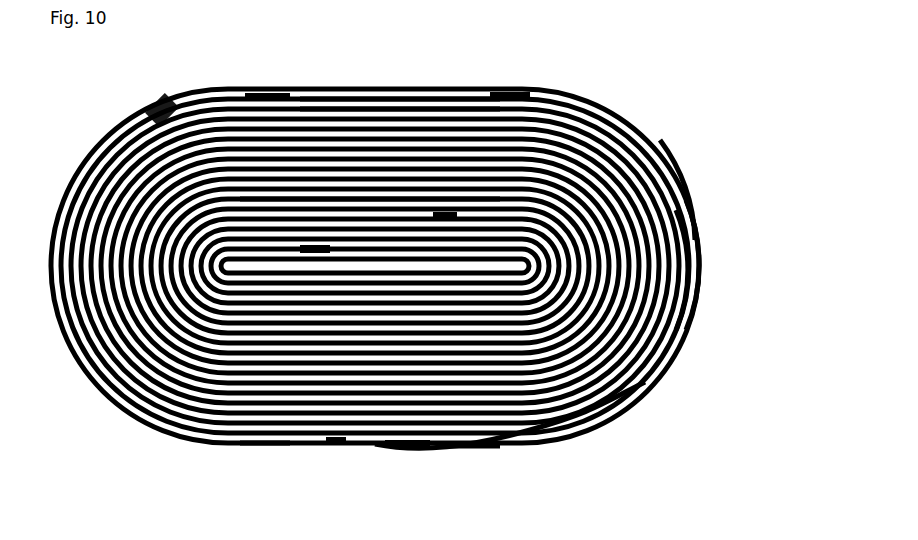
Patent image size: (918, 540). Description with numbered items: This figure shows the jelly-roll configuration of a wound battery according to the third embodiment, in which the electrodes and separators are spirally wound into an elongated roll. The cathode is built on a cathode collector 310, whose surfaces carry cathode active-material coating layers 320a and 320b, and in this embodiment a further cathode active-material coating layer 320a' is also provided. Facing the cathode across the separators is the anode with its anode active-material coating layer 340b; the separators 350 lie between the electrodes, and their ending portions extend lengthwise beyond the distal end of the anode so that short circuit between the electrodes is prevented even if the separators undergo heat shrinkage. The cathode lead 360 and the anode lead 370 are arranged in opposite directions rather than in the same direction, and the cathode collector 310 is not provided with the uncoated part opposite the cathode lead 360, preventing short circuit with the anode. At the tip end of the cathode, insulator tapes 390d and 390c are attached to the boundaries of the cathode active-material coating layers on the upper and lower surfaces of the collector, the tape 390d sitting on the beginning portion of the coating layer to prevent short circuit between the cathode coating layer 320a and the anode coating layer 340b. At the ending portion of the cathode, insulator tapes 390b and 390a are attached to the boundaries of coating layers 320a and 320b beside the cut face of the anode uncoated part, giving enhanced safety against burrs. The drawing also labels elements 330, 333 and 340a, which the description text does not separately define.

The cathode collector 310 is at (313, 87).
The cathode active-material coating layer 320a is at (388, 124).
The cathode active-material coating layer 320a' is at (470, 470).
The cathode active-material coating layer 320b is at (378, 87).
The separator 330 is at (700, 283).
The end portion of separator 333 is at (523, 441).
The first separator 340a is at (700, 223).
The anode active-material coating layer 340b is at (698, 250).
The separator 350 is at (248, 450).
The cathode lead 360 is at (335, 447).
The anode lead 370 is at (460, 217).
The insulator tape 390a is at (143, 107).
The insulator tape 390b is at (235, 93).
The insulator tape 390c is at (512, 90).
The insulator tape 390d is at (332, 249).